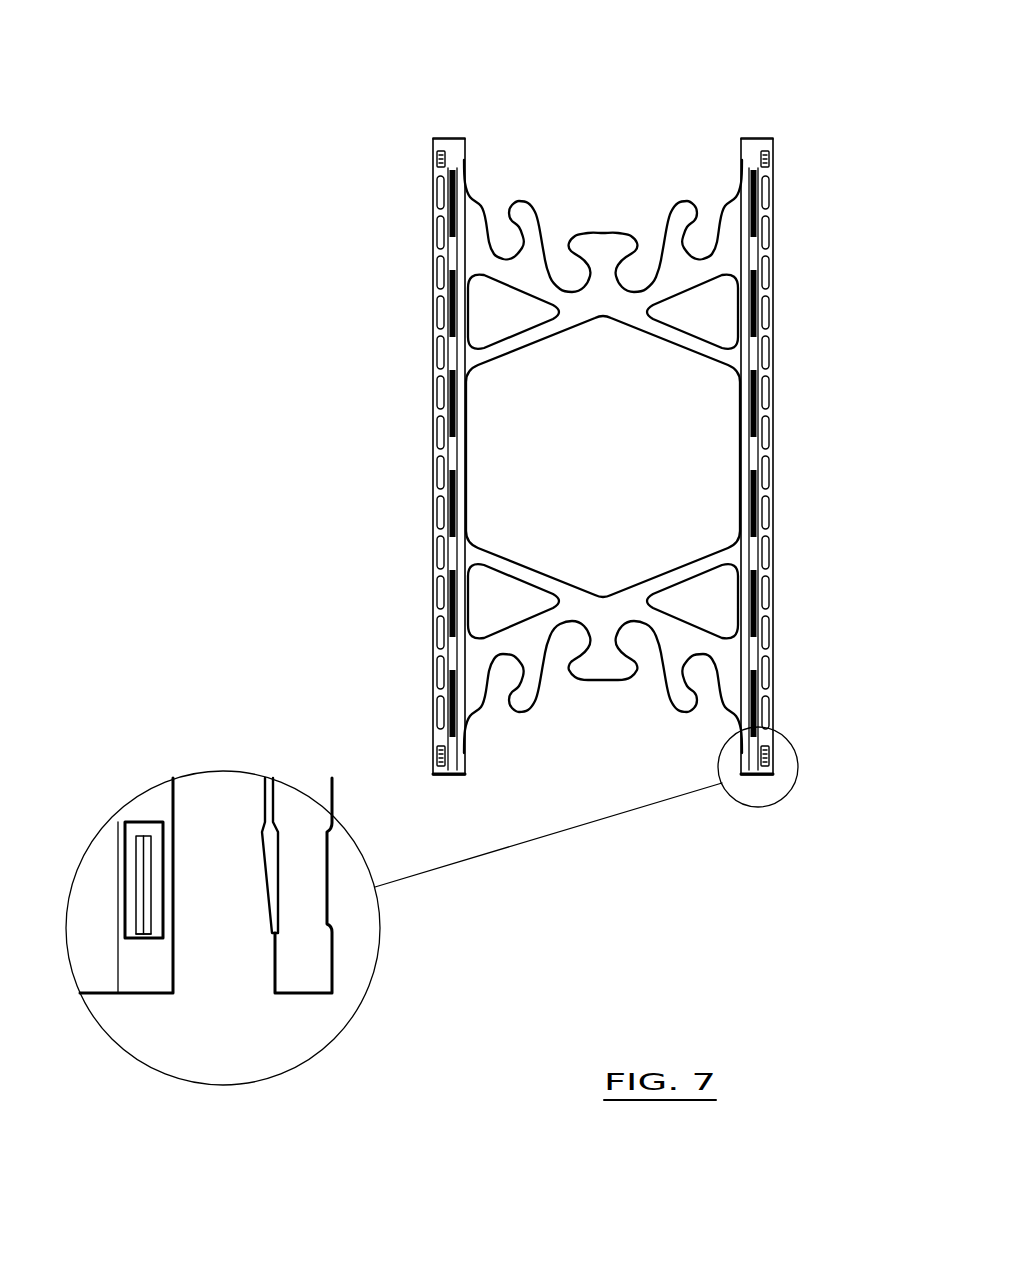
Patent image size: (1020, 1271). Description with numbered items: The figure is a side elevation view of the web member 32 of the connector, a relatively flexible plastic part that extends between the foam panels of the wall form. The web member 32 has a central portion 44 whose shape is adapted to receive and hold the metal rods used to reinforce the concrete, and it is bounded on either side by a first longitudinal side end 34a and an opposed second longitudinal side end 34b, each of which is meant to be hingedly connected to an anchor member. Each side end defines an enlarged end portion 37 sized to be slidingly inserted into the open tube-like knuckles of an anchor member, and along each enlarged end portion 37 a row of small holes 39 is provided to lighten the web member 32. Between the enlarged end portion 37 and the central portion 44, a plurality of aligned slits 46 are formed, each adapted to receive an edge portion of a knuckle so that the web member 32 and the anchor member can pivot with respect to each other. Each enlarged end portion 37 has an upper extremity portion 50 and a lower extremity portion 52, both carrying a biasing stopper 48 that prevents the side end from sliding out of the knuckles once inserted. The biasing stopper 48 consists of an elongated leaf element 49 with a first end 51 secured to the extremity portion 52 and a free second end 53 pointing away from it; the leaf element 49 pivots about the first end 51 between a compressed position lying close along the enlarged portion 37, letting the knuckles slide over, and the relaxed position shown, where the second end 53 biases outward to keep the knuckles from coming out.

The web member 32 is at (328, 285).
The first longitudinal side end 34a is at (472, 61).
The second longitudinal side end 34b is at (788, 61).
The enlarged end portion 37 is at (447, 485).
The small holes 39 is at (767, 387).
The central portion 44 is at (609, 188).
The slits 46 is at (455, 310).
The biasing stopper 48 is at (433, 161).
The elongated leaf element 49 is at (262, 832).
The upper extremity portion 50 is at (437, 138).
The first end 51 is at (143, 933).
The lower extremity portion 52 is at (447, 772).
The free second end 53 is at (270, 790).